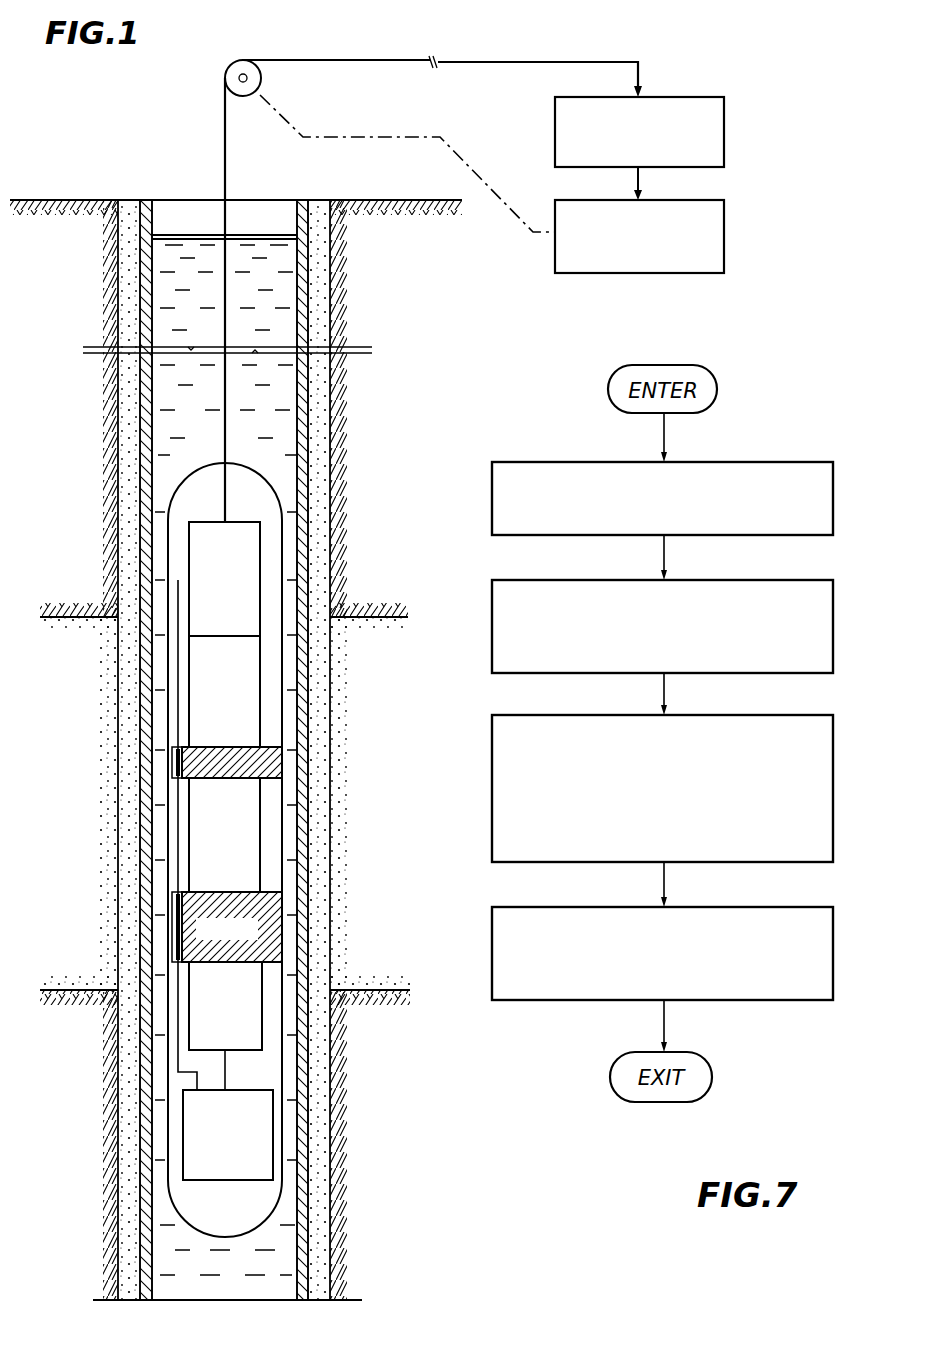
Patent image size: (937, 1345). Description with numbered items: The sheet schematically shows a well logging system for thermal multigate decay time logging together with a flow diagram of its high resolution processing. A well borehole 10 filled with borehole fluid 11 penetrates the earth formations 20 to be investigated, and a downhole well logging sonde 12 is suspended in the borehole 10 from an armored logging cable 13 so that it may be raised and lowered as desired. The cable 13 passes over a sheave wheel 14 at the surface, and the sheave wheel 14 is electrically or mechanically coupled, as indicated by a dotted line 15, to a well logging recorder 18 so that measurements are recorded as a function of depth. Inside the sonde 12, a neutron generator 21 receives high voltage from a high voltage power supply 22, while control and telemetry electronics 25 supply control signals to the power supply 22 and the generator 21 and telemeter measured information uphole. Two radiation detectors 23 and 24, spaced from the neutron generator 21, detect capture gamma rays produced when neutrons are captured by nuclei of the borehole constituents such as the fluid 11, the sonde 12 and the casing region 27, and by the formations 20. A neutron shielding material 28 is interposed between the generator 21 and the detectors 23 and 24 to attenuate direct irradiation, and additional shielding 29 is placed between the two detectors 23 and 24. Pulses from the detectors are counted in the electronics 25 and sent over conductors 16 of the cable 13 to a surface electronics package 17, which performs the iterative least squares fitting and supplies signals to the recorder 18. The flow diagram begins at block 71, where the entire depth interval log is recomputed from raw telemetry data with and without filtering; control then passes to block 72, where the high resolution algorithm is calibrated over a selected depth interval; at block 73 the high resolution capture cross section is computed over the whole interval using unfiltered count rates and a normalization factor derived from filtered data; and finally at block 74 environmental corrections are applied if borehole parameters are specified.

In FIG. 1, the well borehole 10 is at (185, 180).
In FIG. 1, the borehole fluid 11 is at (278, 284).
In FIG. 1, the downhole well logging sonde 12 is at (268, 484).
In FIG. 1, the armored logging cable 13 is at (338, 58).
In FIG. 1, the sheave wheel 14 is at (262, 78).
In FIG. 1, the dotted line 15 is at (392, 133).
In FIG. 1, the conductors 16 is at (531, 60).
In FIG. 1, the surface electronics package 17 is at (724, 133).
In FIG. 1, the well logging recorder 18 is at (724, 233).
In FIG. 1, the earth formations 20 is at (86, 757).
In FIG. 1, the neutron generator 21 is at (190, 1010).
In FIG. 1, the high voltage power supply 22 is at (273, 1125).
In FIG. 1, the radiation detector 23 is at (190, 828).
In FIG. 1, the radiation detector 24 is at (186, 688).
In FIG. 1, the control and telemetry electronics 25 is at (190, 550).
In FIG. 1, the borehole constituent 27 is at (315, 880).
In FIG. 1, the neutron shielding material 28 is at (275, 946).
In FIG. 1, the shielding 29 is at (270, 764).
In FIG. 7, the recompute log block 71 is at (833, 500).
In FIG. 7, the calibration block 72 is at (833, 632).
In FIG. 7, the sigma HR computation block 73 is at (833, 790).
In FIG. 7, the corrections block 74 is at (833, 955).